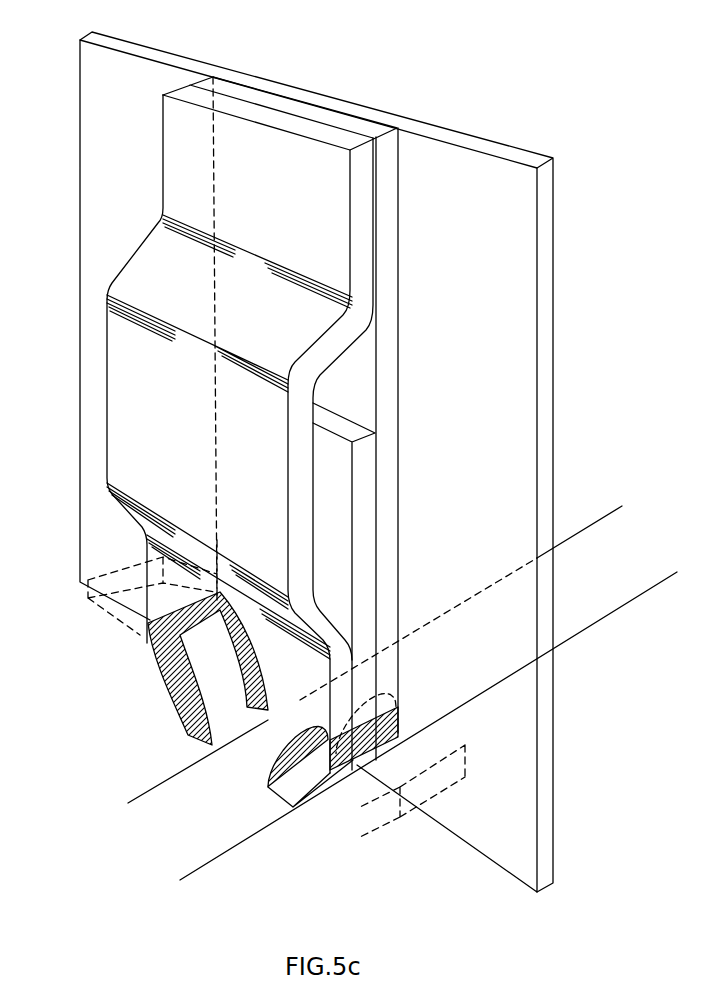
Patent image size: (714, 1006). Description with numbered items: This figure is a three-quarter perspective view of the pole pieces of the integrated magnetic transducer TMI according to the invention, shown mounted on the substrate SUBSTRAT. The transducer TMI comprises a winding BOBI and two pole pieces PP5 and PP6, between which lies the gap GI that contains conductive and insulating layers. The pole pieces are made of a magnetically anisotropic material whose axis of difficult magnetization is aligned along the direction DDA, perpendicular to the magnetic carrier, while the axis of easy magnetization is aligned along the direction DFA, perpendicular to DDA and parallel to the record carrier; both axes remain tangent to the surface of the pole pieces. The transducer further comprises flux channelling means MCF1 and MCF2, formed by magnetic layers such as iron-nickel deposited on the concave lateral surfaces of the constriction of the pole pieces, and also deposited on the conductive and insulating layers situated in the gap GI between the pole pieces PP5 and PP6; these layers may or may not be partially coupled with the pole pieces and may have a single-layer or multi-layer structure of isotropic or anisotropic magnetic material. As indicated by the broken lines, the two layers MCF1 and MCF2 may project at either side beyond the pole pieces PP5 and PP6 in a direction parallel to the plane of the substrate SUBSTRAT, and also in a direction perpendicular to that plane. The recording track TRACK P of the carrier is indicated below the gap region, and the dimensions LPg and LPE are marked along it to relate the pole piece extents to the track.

The pole piece PP5 is at (187, 90).
The pole piece PP6 is at (222, 82).
The transducer TMI is at (400, 205).
The substrate SUBSTRAT is at (520, 308).
The winding BOBI is at (365, 498).
The direction of difficult magnetization DDA is at (200, 351).
The direction of easy magnetization DFA is at (229, 523).
The flux channelling means MCF1 is at (322, 790).
The flux channelling means MCF2 is at (162, 661).
The gap GI is at (253, 757).
The gap pole length LPg is at (238, 810).
The pole extent length LPE is at (220, 867).
The recording track TRACK P is at (577, 627).